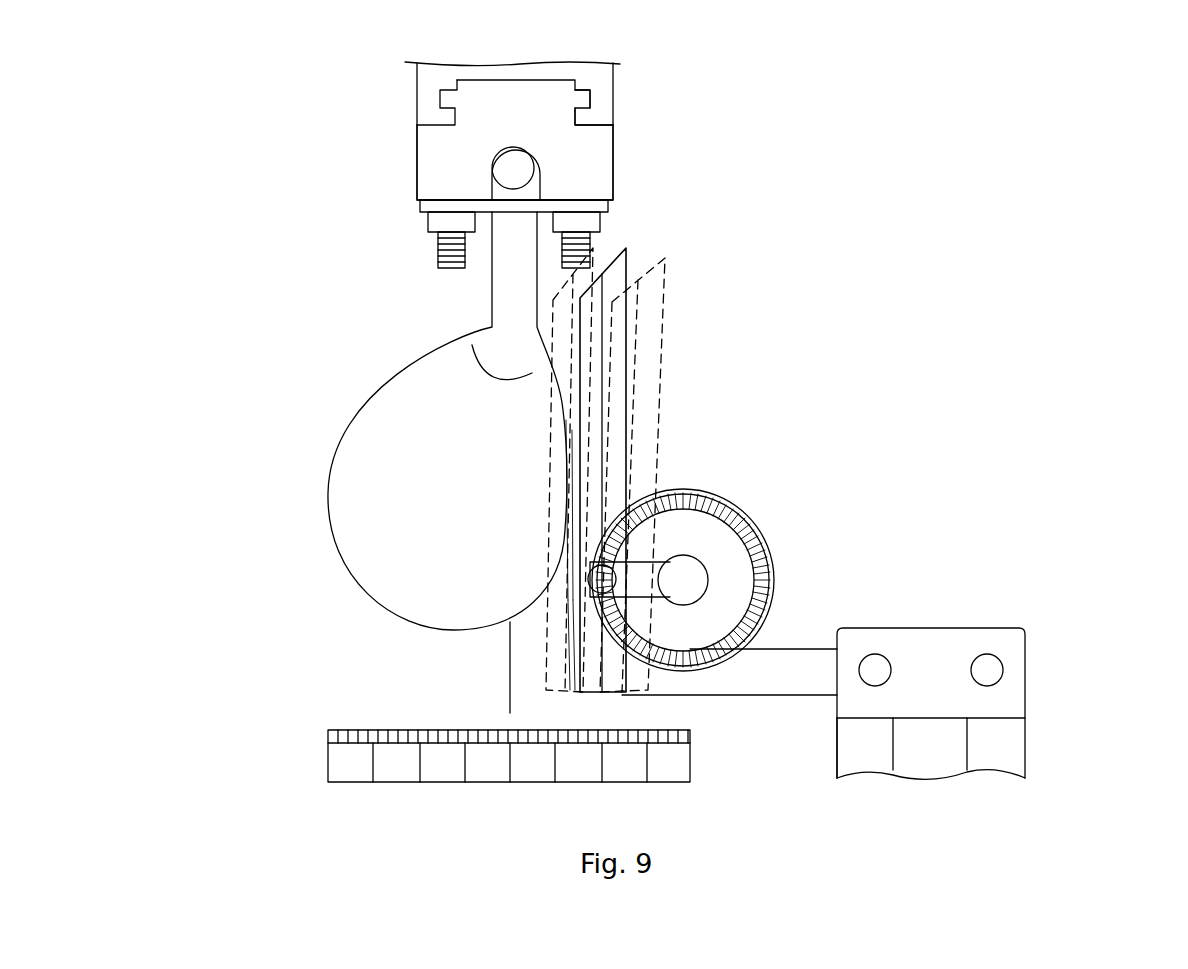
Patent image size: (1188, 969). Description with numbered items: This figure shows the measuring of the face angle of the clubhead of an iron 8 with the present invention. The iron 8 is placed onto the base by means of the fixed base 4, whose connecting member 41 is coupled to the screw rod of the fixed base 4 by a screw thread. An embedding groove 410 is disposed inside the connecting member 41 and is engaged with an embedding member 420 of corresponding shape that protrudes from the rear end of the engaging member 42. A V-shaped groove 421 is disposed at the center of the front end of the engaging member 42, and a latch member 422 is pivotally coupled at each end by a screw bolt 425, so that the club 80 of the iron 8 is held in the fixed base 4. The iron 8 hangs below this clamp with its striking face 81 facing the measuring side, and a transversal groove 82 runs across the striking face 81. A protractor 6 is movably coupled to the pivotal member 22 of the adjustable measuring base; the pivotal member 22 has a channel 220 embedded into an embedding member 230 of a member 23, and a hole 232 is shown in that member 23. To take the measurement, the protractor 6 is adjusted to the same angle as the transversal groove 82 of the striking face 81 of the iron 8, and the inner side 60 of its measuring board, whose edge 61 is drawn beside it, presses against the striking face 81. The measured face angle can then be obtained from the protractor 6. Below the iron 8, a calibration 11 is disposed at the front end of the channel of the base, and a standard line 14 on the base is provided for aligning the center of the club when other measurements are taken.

The fixed base 4 is at (545, 50).
The connecting member 41 is at (428, 80).
The engaging member 42 is at (445, 140).
The embedding groove 410 is at (590, 97).
The embedding member 420 is at (582, 100).
The club 80 is at (513, 172).
The V-shaped groove 421 is at (542, 192).
The latch member 422 is at (435, 205).
The screw bolt 425 is at (438, 250).
The iron 8 is at (435, 515).
The striking face 81 is at (562, 412).
The transversal groove 82 is at (565, 485).
The inner side of the measuring board 60 is at (627, 268).
The blade edge 61 is at (580, 330).
The standard line 14 is at (510, 667).
The calibration 11 is at (388, 770).
The protractor 6 is at (795, 535).
The bracket 23 is at (933, 662).
The mounting hole 232 is at (990, 671).
The channel 220 is at (967, 747).
The pivotal member 22 is at (860, 742).
The embedding member 230 is at (933, 742).